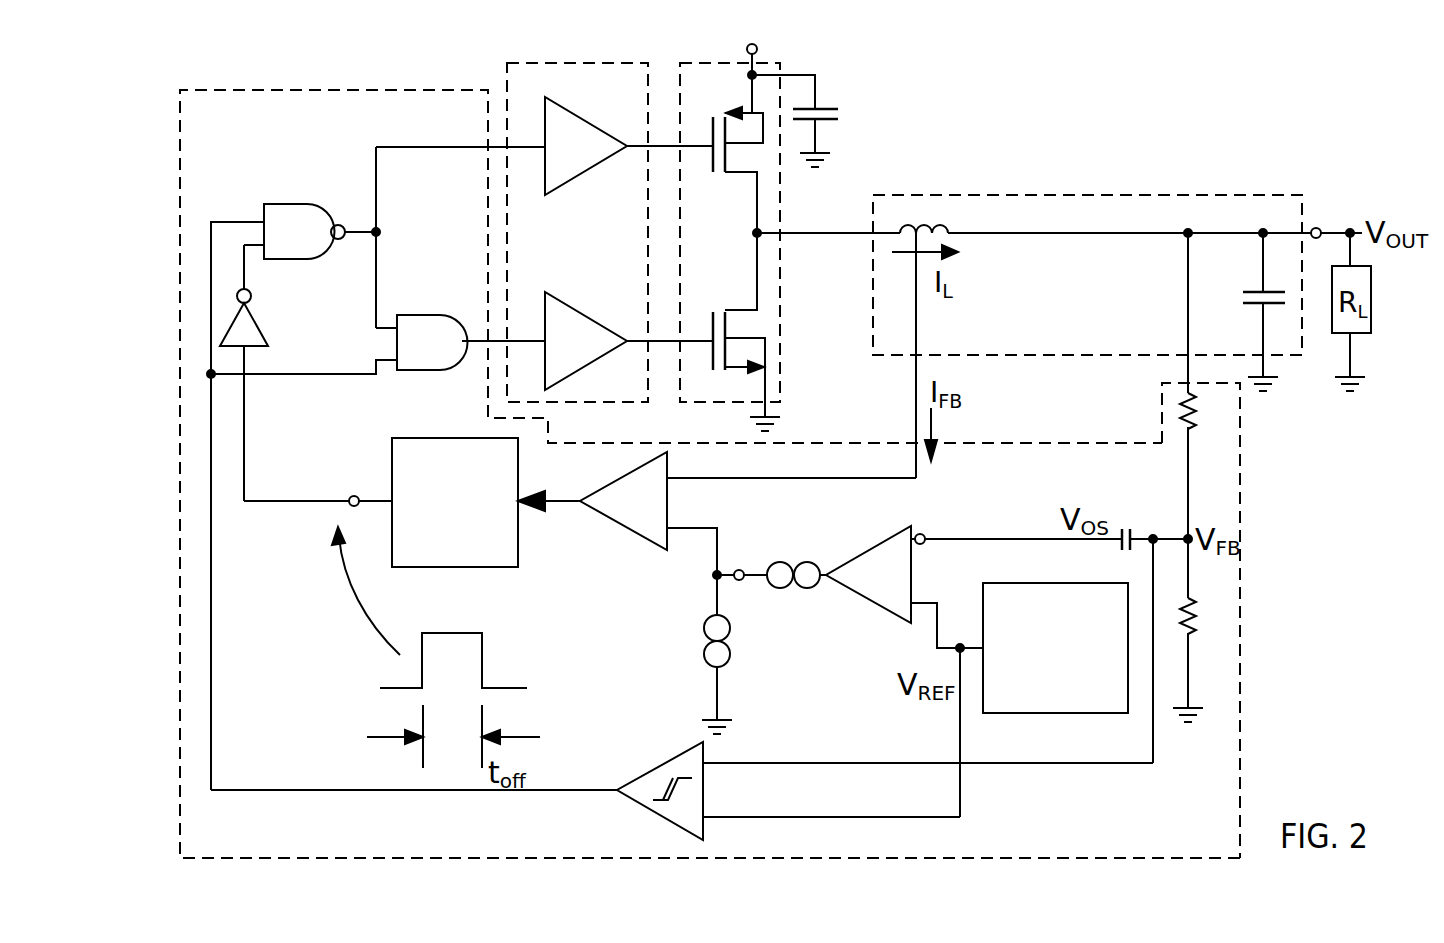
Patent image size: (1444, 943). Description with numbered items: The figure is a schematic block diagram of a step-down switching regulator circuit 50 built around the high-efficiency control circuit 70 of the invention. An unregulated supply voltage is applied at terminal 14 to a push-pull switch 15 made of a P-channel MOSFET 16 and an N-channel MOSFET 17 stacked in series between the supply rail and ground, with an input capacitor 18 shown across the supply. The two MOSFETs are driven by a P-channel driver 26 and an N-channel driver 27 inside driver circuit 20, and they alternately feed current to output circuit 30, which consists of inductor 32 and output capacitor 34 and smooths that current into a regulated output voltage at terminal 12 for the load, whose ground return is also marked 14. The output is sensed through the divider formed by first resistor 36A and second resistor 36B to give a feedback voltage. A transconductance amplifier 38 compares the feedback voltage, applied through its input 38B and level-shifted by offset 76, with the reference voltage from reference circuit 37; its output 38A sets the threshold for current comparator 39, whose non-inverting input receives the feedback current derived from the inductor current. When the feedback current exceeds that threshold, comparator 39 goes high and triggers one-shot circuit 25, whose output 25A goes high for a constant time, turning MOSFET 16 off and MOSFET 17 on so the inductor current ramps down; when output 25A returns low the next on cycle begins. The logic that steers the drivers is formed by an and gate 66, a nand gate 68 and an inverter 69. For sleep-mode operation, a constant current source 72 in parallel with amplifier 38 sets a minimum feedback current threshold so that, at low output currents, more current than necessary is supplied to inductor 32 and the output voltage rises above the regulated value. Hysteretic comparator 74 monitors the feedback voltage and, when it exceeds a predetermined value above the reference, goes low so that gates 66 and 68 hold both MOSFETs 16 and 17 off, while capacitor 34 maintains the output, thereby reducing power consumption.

The terminal 12 is at (1317, 228).
The terminal 14 is at (757, 50).
The push-pull switch 15 is at (718, 63).
The P-channel MOSFET 16 is at (735, 172).
The N-channel MOSFET 17 is at (737, 370).
The input capacitor 18 is at (822, 109).
The driver circuit 20 is at (545, 63).
The one-shot circuit 25 is at (468, 567).
The output of one-shot circuit 25A is at (357, 496).
The P-channel driver 26 is at (567, 183).
The N-channel driver 27 is at (586, 310).
The output circuit 30 is at (1035, 195).
The inductor 32 is at (947, 228).
The output capacitor 34 is at (1258, 292).
The resistor R1 36A is at (1190, 427).
The resistor R2 36B is at (1190, 633).
The reference circuit 37 is at (1070, 583).
The transconductance amplifier 38 is at (855, 597).
The output of transconductance amplifier 38A is at (741, 570).
The amplifier inverting input 38B is at (920, 534).
The current comparator 39 is at (635, 535).
The switching regulator circuit 50 is at (953, 148).
The AND gate 66 is at (418, 315).
The NAND gate 68 is at (287, 204).
The inverter 69 is at (254, 322).
The control circuit 70 is at (1240, 570).
The constant current source 72 is at (735, 660).
The hysteretic comparator 74 is at (655, 766).
The offset 76 is at (1121, 528).